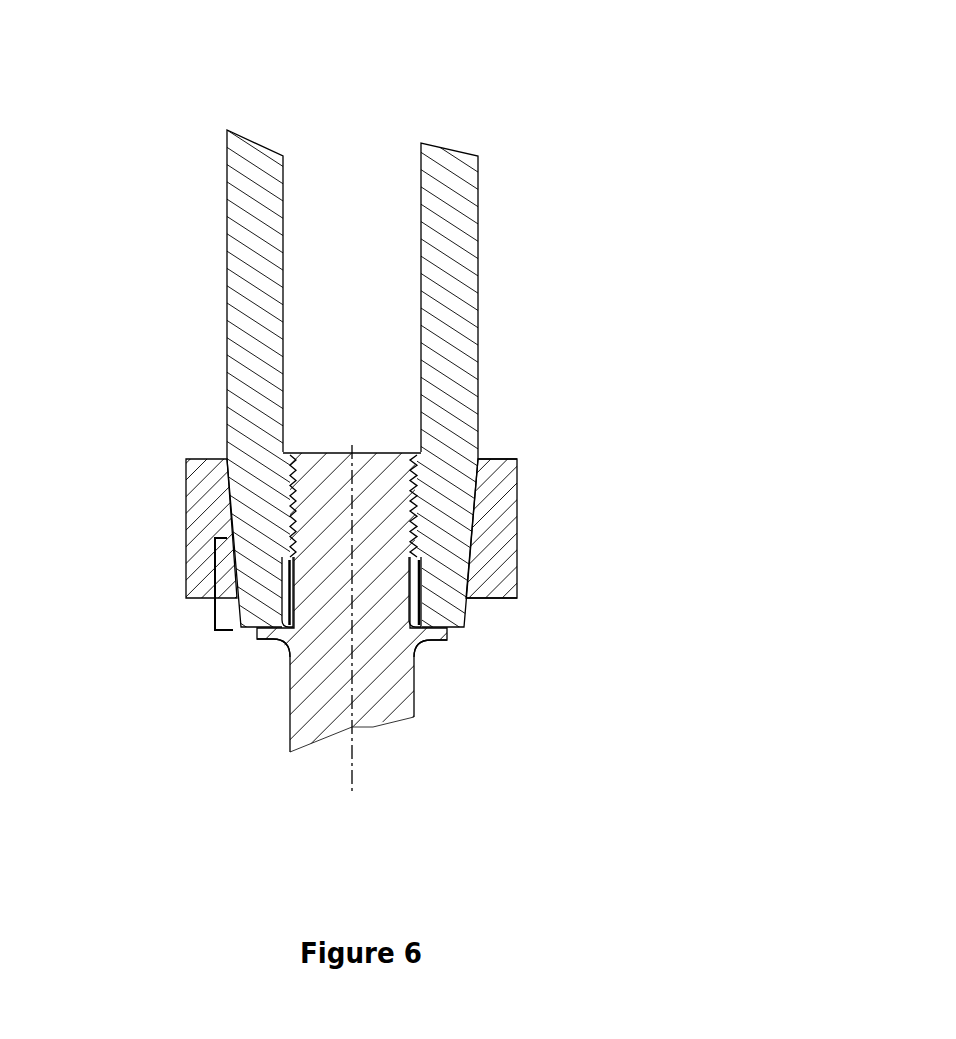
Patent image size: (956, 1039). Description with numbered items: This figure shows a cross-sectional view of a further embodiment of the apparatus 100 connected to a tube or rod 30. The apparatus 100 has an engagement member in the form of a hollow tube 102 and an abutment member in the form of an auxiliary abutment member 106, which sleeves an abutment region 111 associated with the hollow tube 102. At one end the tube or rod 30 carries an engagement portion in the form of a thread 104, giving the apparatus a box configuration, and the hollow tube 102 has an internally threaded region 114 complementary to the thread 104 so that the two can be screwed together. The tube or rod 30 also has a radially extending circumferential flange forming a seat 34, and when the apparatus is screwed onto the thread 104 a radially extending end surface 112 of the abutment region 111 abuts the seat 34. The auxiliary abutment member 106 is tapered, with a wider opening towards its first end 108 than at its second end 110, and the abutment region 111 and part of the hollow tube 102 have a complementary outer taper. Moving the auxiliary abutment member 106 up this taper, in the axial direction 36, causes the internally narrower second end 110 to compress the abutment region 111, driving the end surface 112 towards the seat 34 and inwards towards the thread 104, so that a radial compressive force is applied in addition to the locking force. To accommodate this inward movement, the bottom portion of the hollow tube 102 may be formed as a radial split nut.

The apparatus 100 is at (512, 128).
The hollow tube 102 is at (480, 213).
The thread 104 is at (290, 475).
The auxiliary abutment member 106 is at (525, 538).
The first end 108 is at (492, 460).
The second end 110 is at (507, 605).
The abutment region 111 is at (215, 583).
The end surface 112 is at (455, 630).
The internally threaded region 114 is at (415, 512).
The tube or rod 30 is at (280, 713).
The seat 34 is at (428, 637).
The axial direction 36 is at (353, 792).